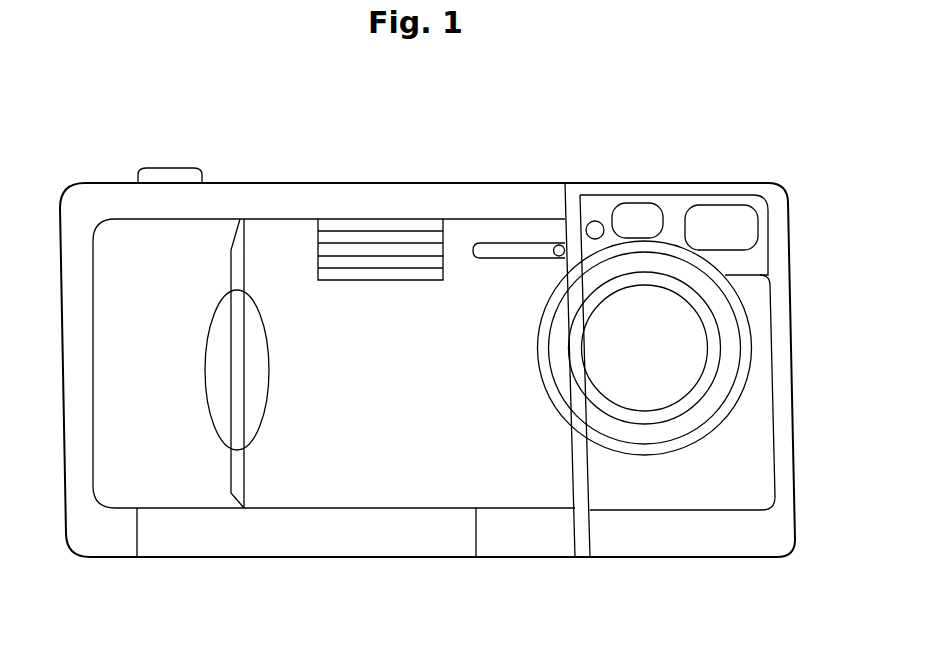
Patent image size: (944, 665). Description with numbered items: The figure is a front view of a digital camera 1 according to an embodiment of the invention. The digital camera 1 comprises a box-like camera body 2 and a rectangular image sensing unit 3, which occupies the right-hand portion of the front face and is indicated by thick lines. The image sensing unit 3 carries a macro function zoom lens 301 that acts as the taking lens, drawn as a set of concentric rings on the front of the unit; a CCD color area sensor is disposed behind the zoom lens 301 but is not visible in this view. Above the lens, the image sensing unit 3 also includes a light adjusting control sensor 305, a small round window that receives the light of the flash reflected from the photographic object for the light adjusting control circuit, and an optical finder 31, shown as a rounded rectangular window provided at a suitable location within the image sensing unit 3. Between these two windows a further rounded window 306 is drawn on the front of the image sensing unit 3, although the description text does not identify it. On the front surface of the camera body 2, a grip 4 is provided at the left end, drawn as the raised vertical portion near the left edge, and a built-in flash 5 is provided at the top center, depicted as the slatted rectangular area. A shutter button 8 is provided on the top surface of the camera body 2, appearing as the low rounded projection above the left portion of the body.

The digital camera 1 is at (425, 102).
The camera body 2 is at (261, 154).
The image sensing unit 3 is at (630, 149).
The grip 4 is at (105, 368).
The built-in flash 5 is at (390, 276).
The shutter button 8 is at (175, 173).
The zoom lens 301 is at (745, 333).
The light adjusting control sensor 305 is at (589, 220).
The viewfinder window 306 is at (650, 204).
The optical finder 31 is at (733, 205).